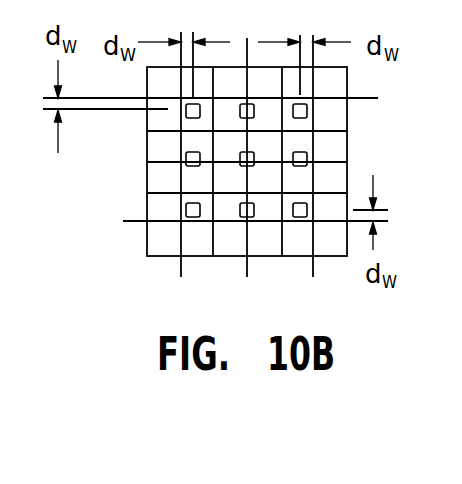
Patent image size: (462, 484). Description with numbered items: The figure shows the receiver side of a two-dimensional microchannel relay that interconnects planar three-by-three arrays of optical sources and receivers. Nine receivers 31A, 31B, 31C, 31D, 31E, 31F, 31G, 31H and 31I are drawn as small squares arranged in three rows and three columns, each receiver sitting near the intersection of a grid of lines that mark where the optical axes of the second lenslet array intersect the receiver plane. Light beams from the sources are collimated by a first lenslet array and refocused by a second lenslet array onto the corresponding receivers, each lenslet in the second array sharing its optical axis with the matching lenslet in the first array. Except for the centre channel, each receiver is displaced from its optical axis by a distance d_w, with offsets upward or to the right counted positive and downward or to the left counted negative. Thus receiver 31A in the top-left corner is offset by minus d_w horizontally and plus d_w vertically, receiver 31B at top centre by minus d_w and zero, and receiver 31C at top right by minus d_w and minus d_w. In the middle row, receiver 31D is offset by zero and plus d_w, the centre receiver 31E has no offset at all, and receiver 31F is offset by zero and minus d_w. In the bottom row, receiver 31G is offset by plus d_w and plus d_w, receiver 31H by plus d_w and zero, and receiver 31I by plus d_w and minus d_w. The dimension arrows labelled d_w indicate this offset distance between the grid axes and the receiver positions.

The receiver 31A is at (188, 113).
The receiver 31B is at (242, 105).
The receiver 31C is at (302, 112).
The receiver 31D is at (187, 164).
The receiver 31E is at (241, 164).
The receiver 31F is at (310, 157).
The receiver 31G is at (186, 216).
The receiver 31H is at (245, 217).
The receiver 31I is at (302, 217).